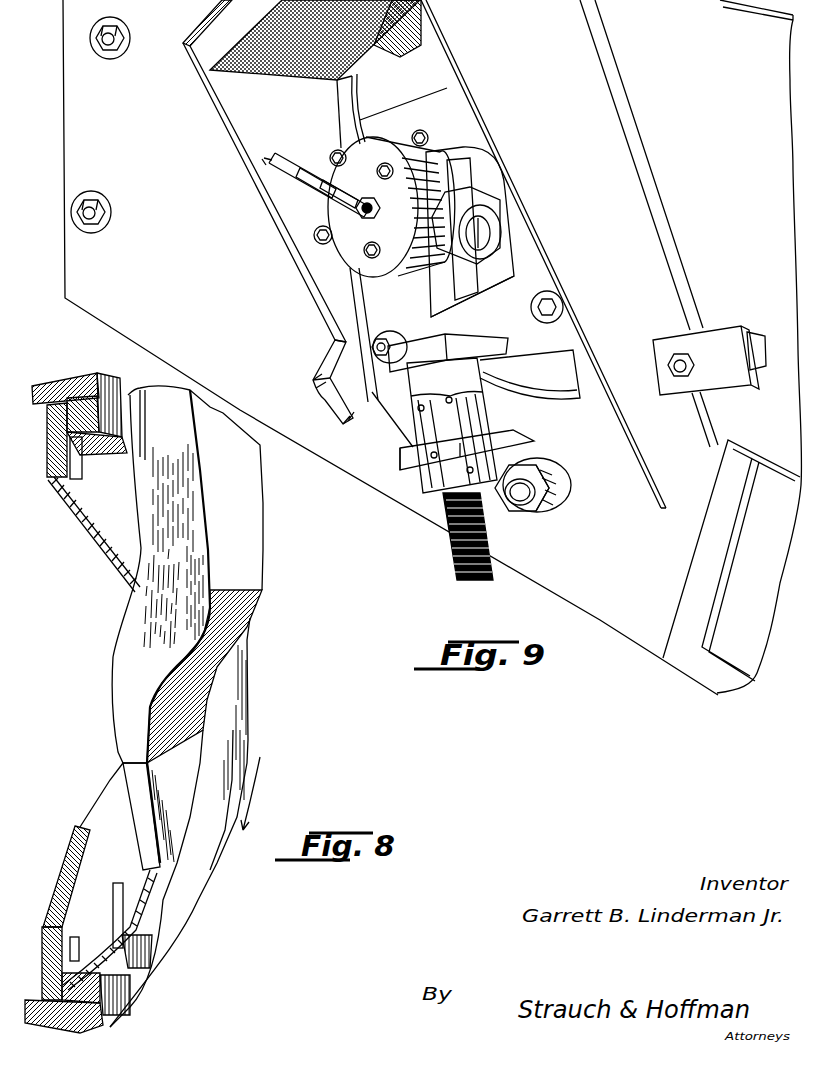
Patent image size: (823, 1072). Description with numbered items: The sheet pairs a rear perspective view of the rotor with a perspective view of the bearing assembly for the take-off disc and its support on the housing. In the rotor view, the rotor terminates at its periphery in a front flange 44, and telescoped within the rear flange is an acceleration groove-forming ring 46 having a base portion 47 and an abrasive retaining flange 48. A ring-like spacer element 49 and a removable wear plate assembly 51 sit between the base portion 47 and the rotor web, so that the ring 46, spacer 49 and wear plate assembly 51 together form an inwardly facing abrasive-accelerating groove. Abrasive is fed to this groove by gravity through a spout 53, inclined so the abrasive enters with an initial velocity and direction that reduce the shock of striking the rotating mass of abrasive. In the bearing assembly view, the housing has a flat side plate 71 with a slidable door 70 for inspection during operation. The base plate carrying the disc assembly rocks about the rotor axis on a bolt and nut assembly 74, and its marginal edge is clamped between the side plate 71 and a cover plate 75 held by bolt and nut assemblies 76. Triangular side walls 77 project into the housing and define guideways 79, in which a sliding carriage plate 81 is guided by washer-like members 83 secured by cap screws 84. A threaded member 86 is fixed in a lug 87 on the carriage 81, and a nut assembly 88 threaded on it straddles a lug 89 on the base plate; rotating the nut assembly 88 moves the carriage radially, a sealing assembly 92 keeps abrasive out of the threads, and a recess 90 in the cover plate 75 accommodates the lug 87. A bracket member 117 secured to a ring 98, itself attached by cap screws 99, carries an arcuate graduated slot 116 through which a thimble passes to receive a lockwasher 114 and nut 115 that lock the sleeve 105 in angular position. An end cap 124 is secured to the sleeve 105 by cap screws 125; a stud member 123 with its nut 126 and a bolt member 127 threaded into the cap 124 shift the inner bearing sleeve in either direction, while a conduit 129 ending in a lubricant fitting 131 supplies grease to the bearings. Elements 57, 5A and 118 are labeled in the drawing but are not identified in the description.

In FIG. 8, the front flange 44 is at (80, 1031).
In FIG. 8, the acceleration groove-forming ring 46 is at (130, 984).
In FIG. 8, the base portion 47 is at (130, 1001).
In FIG. 8, the abrasive retaining flange 48 is at (202, 870).
In FIG. 8, the ring-like spacer element 49 is at (143, 870).
In FIG. 8, the removable wear plate assembly 51 is at (97, 822).
In FIG. 8, the spout 53 is at (140, 693).
In FIG. 8, the post 57 is at (110, 900).
In FIG. 8, the band face 5A is at (194, 782).
In FIG. 9, the slidable door 70 is at (762, 596).
In FIG. 9, the flat side plate 71 is at (648, 576).
In FIG. 9, the bolt and nut assembly 74 is at (543, 468).
In FIG. 9, the cover plate 75 is at (200, 183).
In FIG. 9, the bolt and nut assemblies 76 is at (118, 60).
In FIG. 9, the triangular-shaped side walls 77 is at (294, 126).
In FIG. 9, the guideways 79 is at (357, 110).
In FIG. 9, the sliding carriage plate 81 is at (399, 141).
In FIG. 9, the washer-like members 83 is at (535, 298).
In FIG. 9, the cap screws 84 is at (362, 321).
In FIG. 9, the threaded member 86 is at (452, 554).
In FIG. 9, the lug 87 is at (478, 346).
In FIG. 9, the nut assembly 88 is at (413, 472).
In FIG. 9, the lug 89 is at (467, 450).
In FIG. 9, the recess 90 is at (320, 381).
In FIG. 9, the sealing assembly 92 is at (452, 425).
In FIG. 9, the ring 98 is at (458, 122).
In FIG. 9, the cap screws 99 is at (423, 130).
In FIG. 9, the sleeve 105 is at (438, 190).
In FIG. 9, the lockwasher 114 is at (455, 197).
In FIG. 9, the nut 115 is at (485, 212).
In FIG. 9, the arcuate graduated slot 116 is at (476, 229).
In FIG. 9, the bracket member 117 is at (498, 311).
In FIG. 9, the hole 118 is at (482, 230).
In FIG. 9, the stud member 123 is at (378, 170).
In FIG. 9, the end cap 124 is at (362, 248).
In FIG. 9, the cap screws 125 is at (331, 155).
In FIG. 9, the nut 126 is at (366, 197).
In FIG. 9, the bolt member 127 is at (318, 200).
In FIG. 9, the conduit 129 is at (335, 212).
In FIG. 9, the lubricant fitting 131 is at (313, 178).